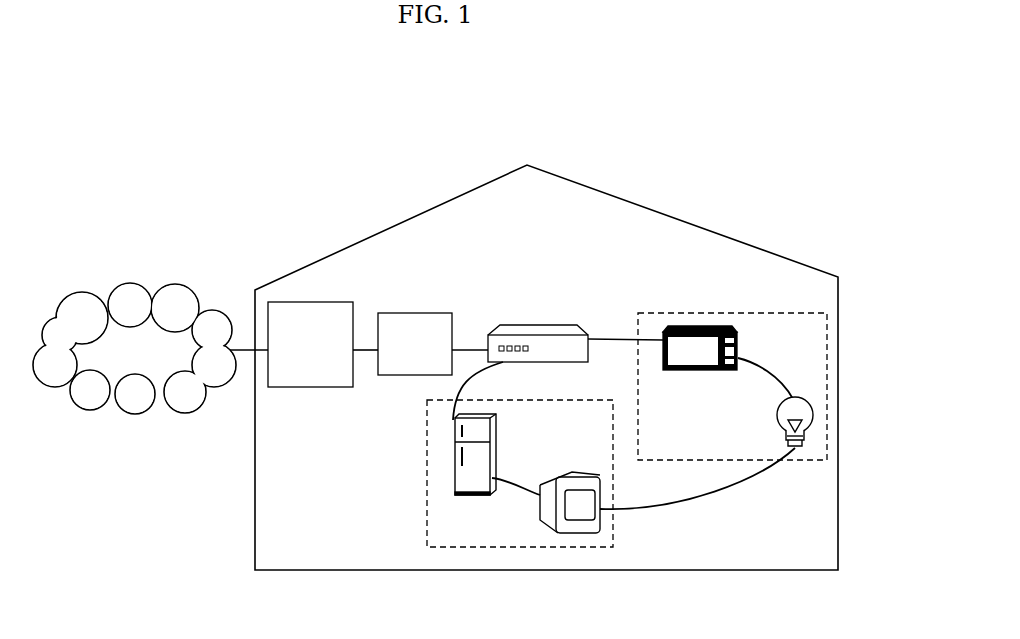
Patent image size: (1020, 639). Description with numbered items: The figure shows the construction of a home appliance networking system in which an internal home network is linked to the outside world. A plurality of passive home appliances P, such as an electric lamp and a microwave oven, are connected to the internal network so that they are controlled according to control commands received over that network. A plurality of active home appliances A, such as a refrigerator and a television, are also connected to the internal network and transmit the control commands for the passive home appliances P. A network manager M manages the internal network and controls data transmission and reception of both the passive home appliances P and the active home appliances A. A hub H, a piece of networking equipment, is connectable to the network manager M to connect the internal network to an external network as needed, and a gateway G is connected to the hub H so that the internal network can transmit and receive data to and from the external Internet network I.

The external Internet network I is at (132, 290).
The gateway G is at (307, 298).
The hub H is at (415, 308).
The network manager M is at (540, 320).
The active home appliances A is at (422, 472).
The passive home appliances P is at (834, 386).